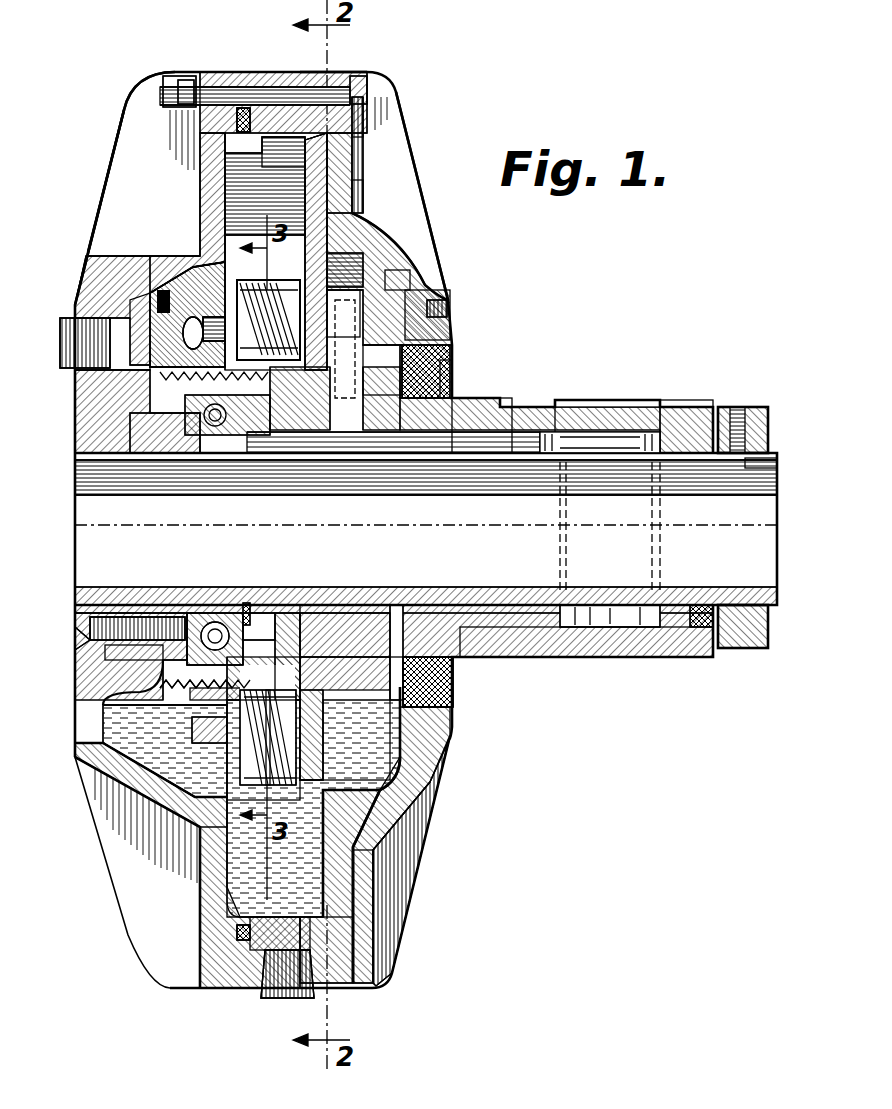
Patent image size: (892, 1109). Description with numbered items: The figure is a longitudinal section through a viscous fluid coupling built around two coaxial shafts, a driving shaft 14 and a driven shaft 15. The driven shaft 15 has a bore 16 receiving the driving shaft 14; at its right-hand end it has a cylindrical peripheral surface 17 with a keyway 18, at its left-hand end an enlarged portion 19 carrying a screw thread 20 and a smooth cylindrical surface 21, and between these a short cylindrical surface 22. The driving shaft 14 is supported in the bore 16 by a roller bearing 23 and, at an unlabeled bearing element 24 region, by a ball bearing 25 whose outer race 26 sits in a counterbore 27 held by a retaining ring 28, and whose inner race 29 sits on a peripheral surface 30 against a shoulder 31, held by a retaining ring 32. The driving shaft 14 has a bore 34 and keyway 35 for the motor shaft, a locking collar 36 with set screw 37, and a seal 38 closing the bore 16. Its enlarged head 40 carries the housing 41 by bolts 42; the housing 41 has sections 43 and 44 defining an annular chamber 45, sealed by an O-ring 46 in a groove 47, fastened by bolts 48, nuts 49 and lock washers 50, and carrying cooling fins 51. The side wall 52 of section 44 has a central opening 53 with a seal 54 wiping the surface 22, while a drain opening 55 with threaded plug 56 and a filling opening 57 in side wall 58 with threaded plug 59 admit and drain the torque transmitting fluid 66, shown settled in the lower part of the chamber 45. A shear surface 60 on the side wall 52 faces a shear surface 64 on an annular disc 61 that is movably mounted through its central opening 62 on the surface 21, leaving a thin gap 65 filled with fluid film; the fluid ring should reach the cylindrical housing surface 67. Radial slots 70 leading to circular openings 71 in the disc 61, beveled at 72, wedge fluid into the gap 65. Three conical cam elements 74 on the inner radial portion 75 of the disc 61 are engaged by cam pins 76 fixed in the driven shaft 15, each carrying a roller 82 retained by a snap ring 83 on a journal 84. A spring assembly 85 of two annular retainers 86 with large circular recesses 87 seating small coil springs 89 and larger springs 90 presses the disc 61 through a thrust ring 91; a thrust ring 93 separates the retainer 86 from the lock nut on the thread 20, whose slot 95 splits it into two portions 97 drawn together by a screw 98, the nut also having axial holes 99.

The driving shaft 14 is at (756, 592).
The driven shaft 15 is at (682, 400).
The bore 16 is at (435, 625).
The cylindrical peripheral surface 17 is at (492, 660).
The keyway 18 is at (608, 400).
The enlarged portion 19 is at (168, 680).
The screw thread 20 is at (185, 692).
The cylindrical surface 21 is at (400, 350).
The cylindrical surface 22 is at (465, 398).
The roller bearing 23 is at (620, 627).
The bearing 24 is at (535, 440).
The ball bearing 25 is at (216, 622).
The outer race 26 is at (245, 400).
The counterbore 27 is at (140, 652).
The retaining ring 28 is at (125, 640).
The inner race 29 is at (198, 612).
The peripheral surface 30 is at (259, 626).
The shoulder 31 is at (190, 482).
The retaining ring 32 is at (250, 608).
The bore 34 is at (420, 612).
The keyway 35 is at (750, 468).
The locking collar 36 is at (748, 648).
The set screw 37 is at (740, 408).
The seal 38 is at (700, 627).
The head 40 is at (130, 443).
The housing 41 is at (115, 113).
The bolts 42 is at (75, 630).
The housing section 43 is at (214, 74).
The housing section 44 is at (340, 74).
The chamber 45 is at (225, 208).
The O-ring 46 is at (250, 128).
The groove 47 is at (245, 110).
The bolts 48 is at (360, 92).
The nuts 49 is at (176, 76).
The lock washers 50 is at (190, 78).
The cooling fins 51 is at (122, 175).
The side wall 52 is at (420, 300).
The central opening 53 is at (440, 352).
The seal 54 is at (452, 370).
The opening 55 is at (335, 937).
The threaded plug 56 is at (285, 1000).
The opening 57 is at (135, 372).
The side wall 58 is at (110, 287).
The threaded plug 59 is at (70, 325).
The viscous fluid shear surface 60 is at (352, 140).
The annular disc 61 is at (354, 198).
The central opening 62 is at (320, 640).
The viscous fluid shear surface 64 is at (308, 168).
The gap 65 is at (330, 160).
The torque transmitting fluid 66 is at (120, 722).
The cylindrical housing surface 67 is at (358, 226).
The radial slots 70 is at (360, 890).
The circular openings 71 is at (375, 840).
The beveled surfaces 72 is at (362, 862).
The cam elements 74 is at (365, 262).
The inner radial portion 75 is at (305, 278).
The cam pins 76 is at (358, 403).
The roller 82 is at (440, 318).
The snap ring 83 is at (395, 280).
The journal 84 is at (400, 262).
The spring assembly 85 is at (200, 265).
The annular retainers 86 is at (248, 280).
The large circular recesses 87 is at (205, 805).
The small coil springs 89 is at (235, 760).
The larger springs 90 is at (288, 688).
The thrust ring 91 is at (312, 645).
The thrust ring 93 is at (260, 688).
The slot 95 is at (203, 322).
The portions 97 is at (210, 305).
The screw 98 is at (183, 338).
The axial holes 99 is at (192, 737).